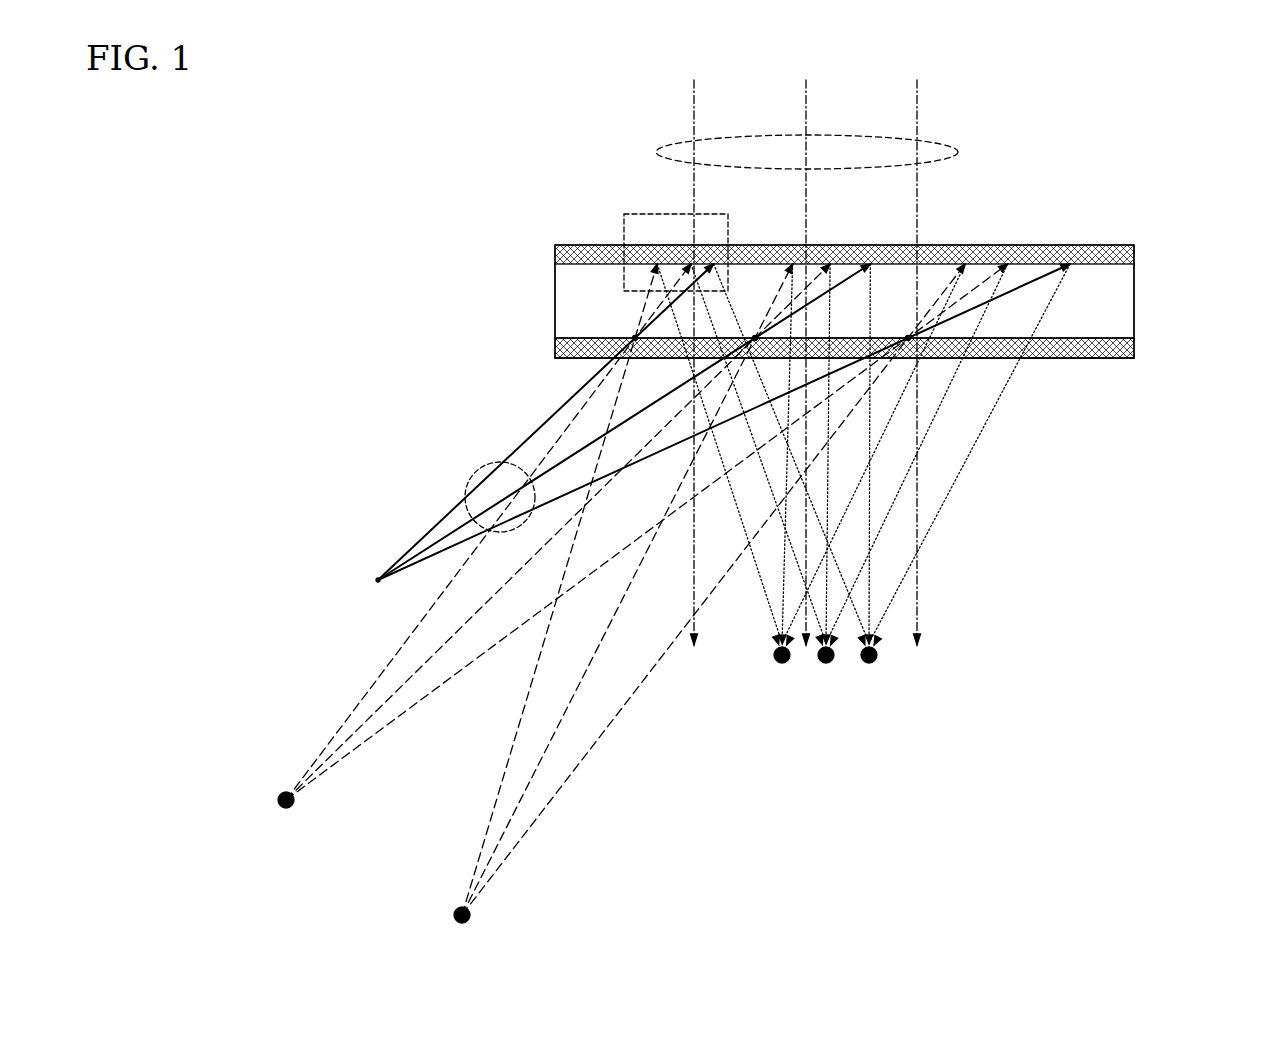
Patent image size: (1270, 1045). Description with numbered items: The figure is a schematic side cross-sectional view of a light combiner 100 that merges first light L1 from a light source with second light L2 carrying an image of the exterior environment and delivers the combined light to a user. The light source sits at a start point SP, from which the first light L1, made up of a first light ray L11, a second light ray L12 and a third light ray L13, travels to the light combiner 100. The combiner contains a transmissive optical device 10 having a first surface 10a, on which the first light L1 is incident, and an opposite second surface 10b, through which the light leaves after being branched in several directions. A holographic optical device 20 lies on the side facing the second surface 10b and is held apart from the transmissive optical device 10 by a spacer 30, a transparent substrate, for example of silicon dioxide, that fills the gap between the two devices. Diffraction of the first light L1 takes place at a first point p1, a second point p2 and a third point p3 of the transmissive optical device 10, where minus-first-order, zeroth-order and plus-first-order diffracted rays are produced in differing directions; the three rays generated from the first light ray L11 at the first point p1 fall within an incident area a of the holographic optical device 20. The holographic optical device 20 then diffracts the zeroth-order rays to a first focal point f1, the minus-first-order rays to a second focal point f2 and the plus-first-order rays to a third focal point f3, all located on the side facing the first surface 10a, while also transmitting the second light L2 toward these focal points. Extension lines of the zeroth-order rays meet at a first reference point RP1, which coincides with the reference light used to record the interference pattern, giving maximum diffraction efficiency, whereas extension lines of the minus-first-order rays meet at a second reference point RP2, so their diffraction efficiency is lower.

The light combiner 100 is at (1155, 183).
The holographic optical device 20 is at (1134, 257).
The transmissive optical device 10 is at (1134, 348).
The first surface 10a is at (1103, 358).
The second surface 10b is at (1112, 338).
The spacer 30 is at (555, 291).
The incident area a is at (624, 221).
The first point p1 is at (633, 337).
The second point p2 is at (755, 336).
The third point p3 is at (908, 336).
The first light L1 is at (470, 475).
The first light ray L11 is at (560, 405).
The second light ray L12 is at (575, 452).
The third light ray L13 is at (650, 458).
The second light L2 is at (660, 152).
The start point SP is at (365, 589).
The first reference point RP1 is at (277, 801).
The second reference point RP2 is at (452, 916).
The first focal point f1 is at (826, 664).
The second focal point f2 is at (782, 664).
The third focal point f3 is at (869, 664).